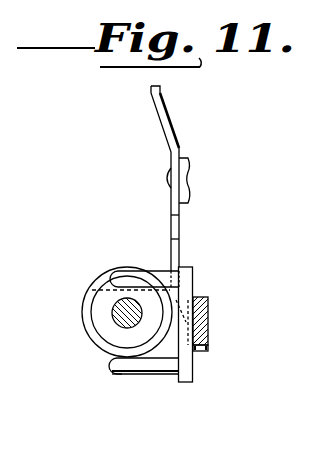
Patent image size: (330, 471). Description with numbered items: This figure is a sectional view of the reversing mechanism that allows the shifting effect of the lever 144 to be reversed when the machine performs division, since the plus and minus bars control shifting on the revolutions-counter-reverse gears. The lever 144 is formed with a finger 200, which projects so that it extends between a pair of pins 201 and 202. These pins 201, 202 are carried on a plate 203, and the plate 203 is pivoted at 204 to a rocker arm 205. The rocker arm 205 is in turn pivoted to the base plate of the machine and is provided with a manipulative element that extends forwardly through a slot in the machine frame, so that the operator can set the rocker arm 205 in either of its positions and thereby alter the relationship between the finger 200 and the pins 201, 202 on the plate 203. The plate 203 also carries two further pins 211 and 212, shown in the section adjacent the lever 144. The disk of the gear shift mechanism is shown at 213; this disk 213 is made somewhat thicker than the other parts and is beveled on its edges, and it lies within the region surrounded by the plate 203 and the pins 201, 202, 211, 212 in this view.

The lever 144 is at (172, 151).
The finger 200 is at (175, 249).
The pin 201 is at (100, 291).
The pin 202 is at (158, 269).
The plate 203 is at (186, 382).
The pivot 204 is at (208, 329).
The rocker arm 205 is at (207, 349).
The pin 211 is at (122, 377).
The pin 212 is at (143, 366).
The disk of the gear shift mechanism 213 is at (95, 308).